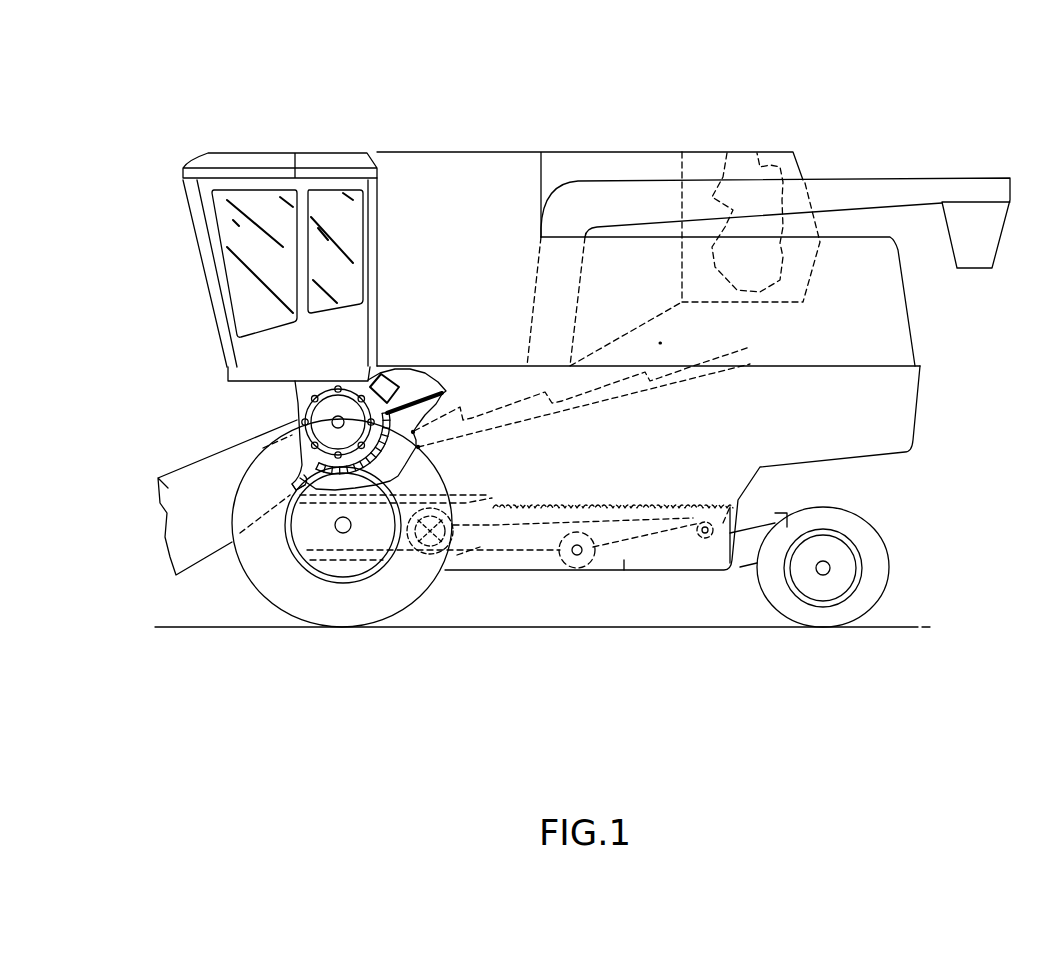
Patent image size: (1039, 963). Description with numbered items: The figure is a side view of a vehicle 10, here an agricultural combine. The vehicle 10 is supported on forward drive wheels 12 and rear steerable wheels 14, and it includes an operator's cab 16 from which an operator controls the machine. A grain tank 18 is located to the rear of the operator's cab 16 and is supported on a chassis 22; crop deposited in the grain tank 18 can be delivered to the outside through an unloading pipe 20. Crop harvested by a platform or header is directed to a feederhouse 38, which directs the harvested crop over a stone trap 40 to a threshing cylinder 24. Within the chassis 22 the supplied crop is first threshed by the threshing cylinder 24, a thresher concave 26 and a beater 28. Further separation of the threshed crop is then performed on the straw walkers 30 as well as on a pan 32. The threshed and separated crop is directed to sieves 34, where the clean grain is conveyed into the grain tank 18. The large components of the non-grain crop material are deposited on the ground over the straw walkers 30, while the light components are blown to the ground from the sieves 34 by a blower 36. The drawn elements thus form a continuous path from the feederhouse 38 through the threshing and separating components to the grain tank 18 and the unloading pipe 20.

The combine harvester 10 is at (590, 135).
The front wheels 12 is at (377, 627).
The rear wheels 14 is at (853, 623).
The operator's cab 16 is at (222, 166).
The grain tank 18 is at (474, 152).
The unloading tube 20 is at (858, 180).
The body / threshing housing 22 is at (698, 441).
The feeder drum 24 is at (297, 417).
The feeder chain conveyor 26 is at (388, 412).
The feeder housing 28 is at (398, 370).
The grain delivery path 30 is at (750, 360).
The grain pan 32 is at (480, 493).
The sieve 34 is at (618, 496).
The cleaning fan 36 is at (431, 565).
The header 38 is at (162, 478).
The feeder inlet 40 is at (293, 470).